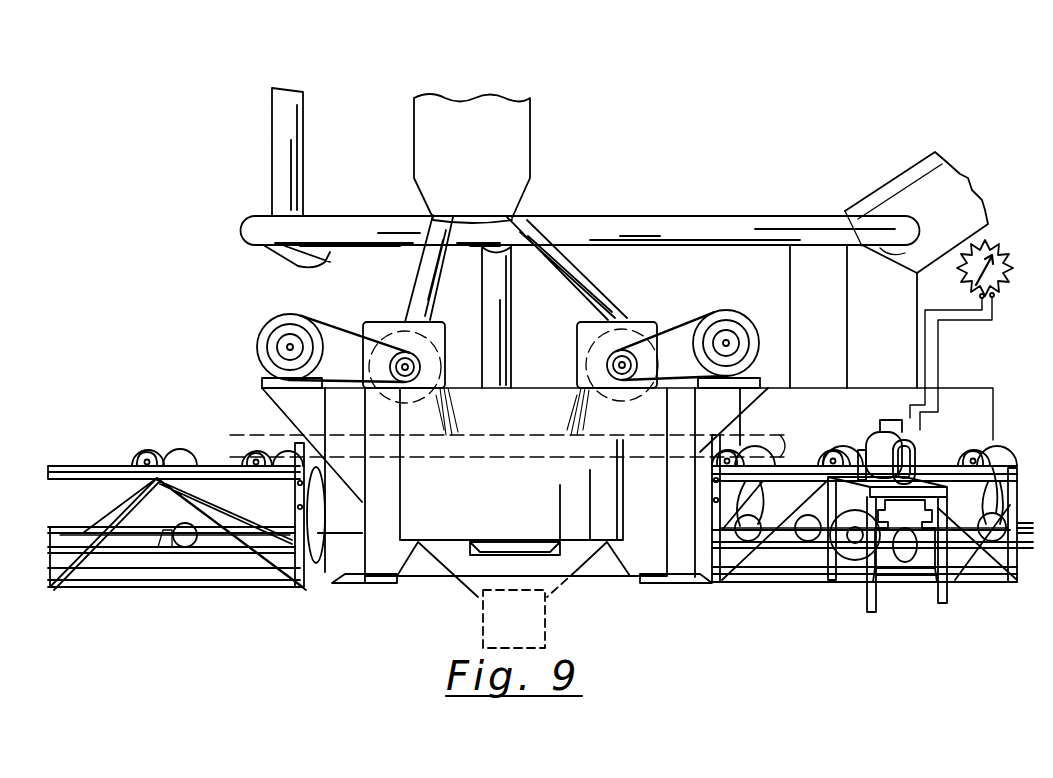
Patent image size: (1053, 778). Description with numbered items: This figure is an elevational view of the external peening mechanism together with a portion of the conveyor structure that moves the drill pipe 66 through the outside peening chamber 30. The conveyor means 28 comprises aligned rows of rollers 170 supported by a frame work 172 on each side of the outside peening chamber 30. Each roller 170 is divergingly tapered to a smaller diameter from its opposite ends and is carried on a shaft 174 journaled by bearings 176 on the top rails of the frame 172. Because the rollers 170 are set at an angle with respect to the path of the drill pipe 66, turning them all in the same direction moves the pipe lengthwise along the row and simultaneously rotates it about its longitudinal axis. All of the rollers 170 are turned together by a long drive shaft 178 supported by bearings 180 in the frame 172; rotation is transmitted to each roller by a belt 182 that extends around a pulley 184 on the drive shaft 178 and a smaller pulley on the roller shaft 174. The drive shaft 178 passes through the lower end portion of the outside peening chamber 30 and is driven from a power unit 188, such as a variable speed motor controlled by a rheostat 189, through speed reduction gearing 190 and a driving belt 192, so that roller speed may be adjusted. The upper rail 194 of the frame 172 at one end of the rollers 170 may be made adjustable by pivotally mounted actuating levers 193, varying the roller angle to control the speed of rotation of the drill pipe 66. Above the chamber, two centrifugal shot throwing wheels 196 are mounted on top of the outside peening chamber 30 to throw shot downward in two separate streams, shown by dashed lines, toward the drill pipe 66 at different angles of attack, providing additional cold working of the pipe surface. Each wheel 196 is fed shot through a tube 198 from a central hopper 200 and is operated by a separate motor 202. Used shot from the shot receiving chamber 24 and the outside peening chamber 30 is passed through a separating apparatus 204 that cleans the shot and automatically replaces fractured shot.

The shot receiving chamber 24 is at (955, 388).
The conveyor means 28 is at (77, 454).
The outside peening chamber 30 is at (530, 506).
The drill pipe 66 is at (528, 437).
The rollers 170 is at (170, 452).
The frame work 172 is at (100, 588).
The shaft 174 is at (976, 455).
The bearings 176 is at (140, 458).
The drive shaft 178 is at (245, 527).
The bearings 180 is at (170, 548).
The belt 182 is at (760, 522).
The pulley 184 is at (752, 500).
The power unit 188 is at (888, 420).
The rheostat 189 is at (960, 290).
The speed reduction gearing 190 is at (902, 582).
The driving belt 192 is at (818, 590).
The actuating levers 193 is at (270, 420).
The upper rail 194 is at (95, 484).
The centrifugal shot throwing wheels 196 is at (392, 303).
The tube 198 is at (562, 284).
The central hopper 200 is at (492, 159).
The motor 202 is at (292, 316).
The separating apparatus 204 is at (603, 208).